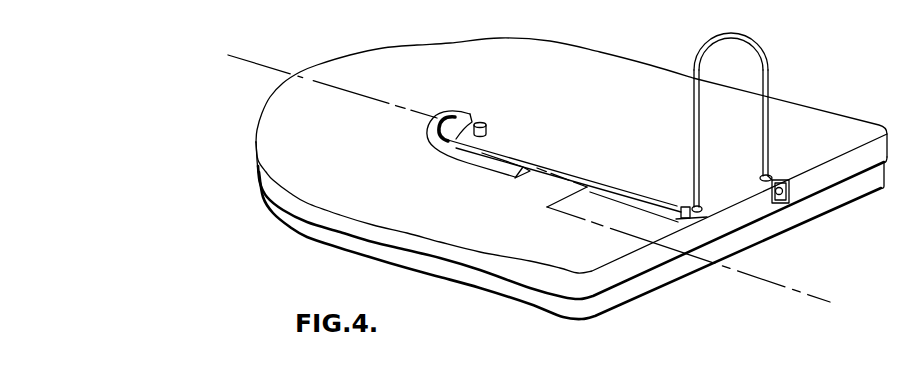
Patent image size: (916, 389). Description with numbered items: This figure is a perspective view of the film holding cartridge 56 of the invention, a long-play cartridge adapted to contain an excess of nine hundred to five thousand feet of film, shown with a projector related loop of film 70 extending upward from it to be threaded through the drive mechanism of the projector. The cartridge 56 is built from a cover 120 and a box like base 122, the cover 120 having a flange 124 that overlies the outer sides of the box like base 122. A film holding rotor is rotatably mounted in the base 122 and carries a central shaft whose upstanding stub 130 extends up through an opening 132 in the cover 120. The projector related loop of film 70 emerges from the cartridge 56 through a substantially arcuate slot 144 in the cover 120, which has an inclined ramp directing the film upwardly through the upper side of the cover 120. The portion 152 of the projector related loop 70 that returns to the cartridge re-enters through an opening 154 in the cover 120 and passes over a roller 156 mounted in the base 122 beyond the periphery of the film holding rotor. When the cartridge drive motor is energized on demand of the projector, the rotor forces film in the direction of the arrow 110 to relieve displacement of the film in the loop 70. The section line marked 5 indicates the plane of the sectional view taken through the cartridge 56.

The section line 5- 5 is at (258, 66).
The film holding cartridge 56 is at (323, 190).
The projector related loop of film 70 is at (694, 70).
The arrow 110 is at (757, 118).
The cover 120 is at (458, 222).
The box like base 122 is at (348, 243).
The flange 124 is at (260, 178).
The upstanding stub 130 is at (485, 123).
The opening 132 is at (488, 135).
The arcuate slot 144 is at (485, 154).
The portion of the projector related loop of film 152 is at (774, 149).
The opening 154 is at (778, 196).
The roller 156 is at (789, 194).